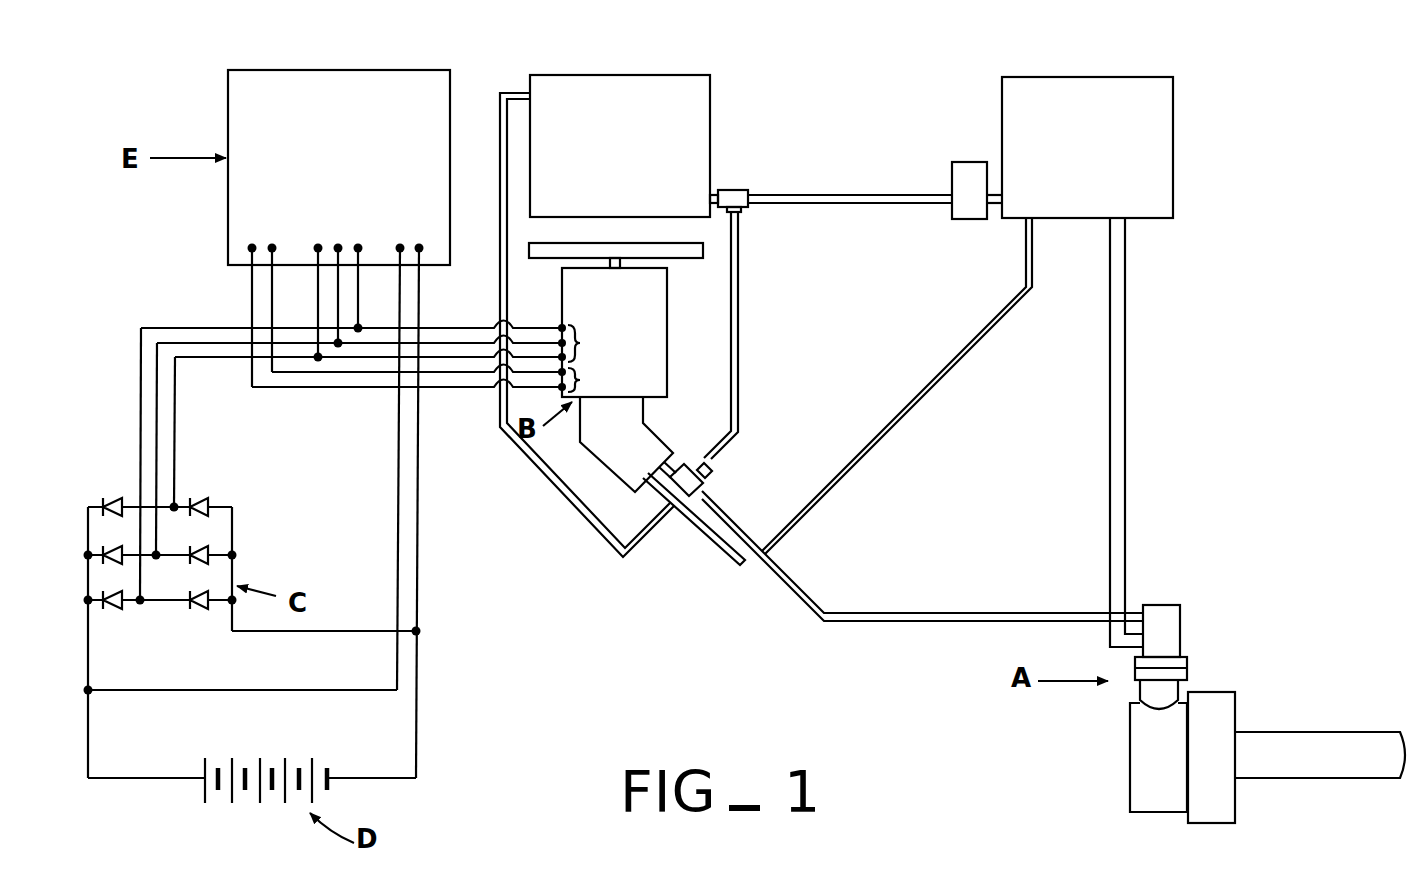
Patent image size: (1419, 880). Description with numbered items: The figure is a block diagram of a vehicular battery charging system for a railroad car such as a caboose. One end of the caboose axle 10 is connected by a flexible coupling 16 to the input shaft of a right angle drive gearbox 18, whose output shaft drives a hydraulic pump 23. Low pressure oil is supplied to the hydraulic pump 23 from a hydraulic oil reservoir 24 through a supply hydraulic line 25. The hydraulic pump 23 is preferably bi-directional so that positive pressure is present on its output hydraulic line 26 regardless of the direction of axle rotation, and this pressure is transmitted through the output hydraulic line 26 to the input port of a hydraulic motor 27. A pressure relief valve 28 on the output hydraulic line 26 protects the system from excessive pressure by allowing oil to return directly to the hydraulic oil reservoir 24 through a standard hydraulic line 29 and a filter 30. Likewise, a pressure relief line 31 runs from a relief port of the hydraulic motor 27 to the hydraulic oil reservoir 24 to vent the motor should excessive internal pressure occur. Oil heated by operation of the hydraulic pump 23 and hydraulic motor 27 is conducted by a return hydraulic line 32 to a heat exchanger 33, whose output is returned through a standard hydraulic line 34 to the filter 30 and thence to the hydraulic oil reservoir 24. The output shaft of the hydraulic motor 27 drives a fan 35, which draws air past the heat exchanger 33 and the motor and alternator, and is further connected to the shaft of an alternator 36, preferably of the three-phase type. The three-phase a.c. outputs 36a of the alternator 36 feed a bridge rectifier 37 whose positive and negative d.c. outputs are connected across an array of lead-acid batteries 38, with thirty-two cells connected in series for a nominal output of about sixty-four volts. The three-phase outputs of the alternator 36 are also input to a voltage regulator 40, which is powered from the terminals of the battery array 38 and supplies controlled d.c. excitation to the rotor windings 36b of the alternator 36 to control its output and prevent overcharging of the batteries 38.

The axle 10 is at (1320, 732).
The flexible coupling 16 is at (1226, 692).
The right angle drive gearbox 18 is at (1130, 762).
The hydraulic pump 23 is at (1181, 632).
The hydraulic oil reservoir 24 is at (1173, 197).
The supply hydraulic line 25 is at (1130, 463).
The output hydraulic line 26 is at (905, 613).
The hydraulic motor 27 is at (652, 432).
The pressure relief valve 28 is at (690, 483).
The standard hydraulic line 29 is at (740, 327).
The filter 30 is at (964, 222).
The pressure relief line 31 is at (887, 428).
The return hydraulic line 32 is at (563, 497).
The heat exchanger 33 is at (710, 139).
The standard hydraulic line 34 is at (808, 196).
The fan 35 is at (695, 261).
The alternator 36 is at (667, 377).
The three-phase a.c. outputs 36a is at (603, 343).
The rotor windings 36b is at (603, 383).
The bridge rectifier 37 is at (236, 544).
The battery array 38 is at (291, 757).
The voltage regulator 40 is at (228, 237).